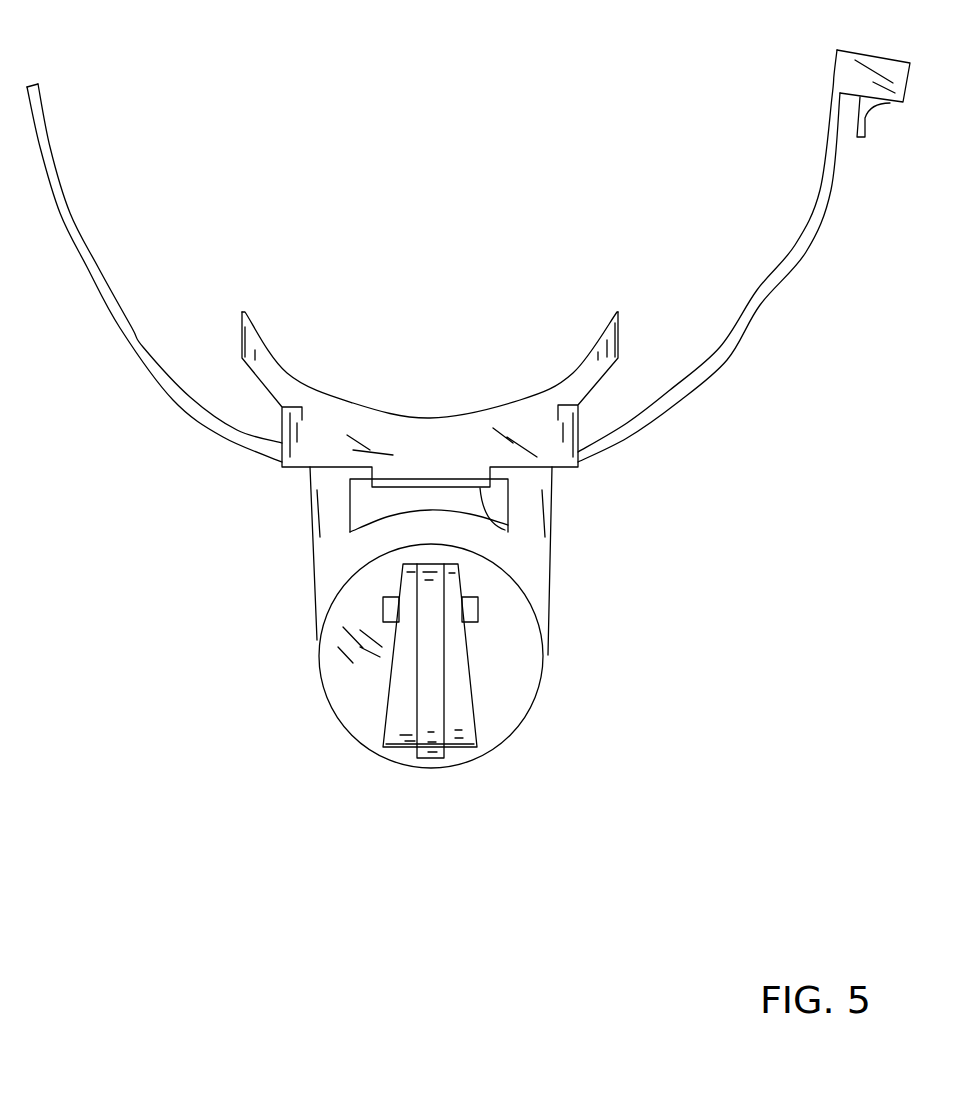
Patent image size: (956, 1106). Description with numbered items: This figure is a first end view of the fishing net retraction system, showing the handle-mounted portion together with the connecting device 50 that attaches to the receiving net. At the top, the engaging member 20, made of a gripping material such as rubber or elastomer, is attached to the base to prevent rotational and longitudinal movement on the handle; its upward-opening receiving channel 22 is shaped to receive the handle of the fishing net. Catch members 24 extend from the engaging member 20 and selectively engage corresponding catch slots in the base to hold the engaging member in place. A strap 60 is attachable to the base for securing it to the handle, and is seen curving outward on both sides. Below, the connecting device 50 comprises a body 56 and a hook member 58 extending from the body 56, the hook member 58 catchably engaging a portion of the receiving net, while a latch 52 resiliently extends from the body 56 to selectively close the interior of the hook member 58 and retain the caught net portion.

The strap 60 is at (68, 163).
The engaging member 20 is at (533, 385).
The receiving channel 22 is at (308, 375).
The catch members 24 is at (508, 525).
The connecting device 50 is at (480, 694).
The latch 52 is at (390, 607).
The body 56 is at (367, 723).
The hook member 58 is at (398, 723).